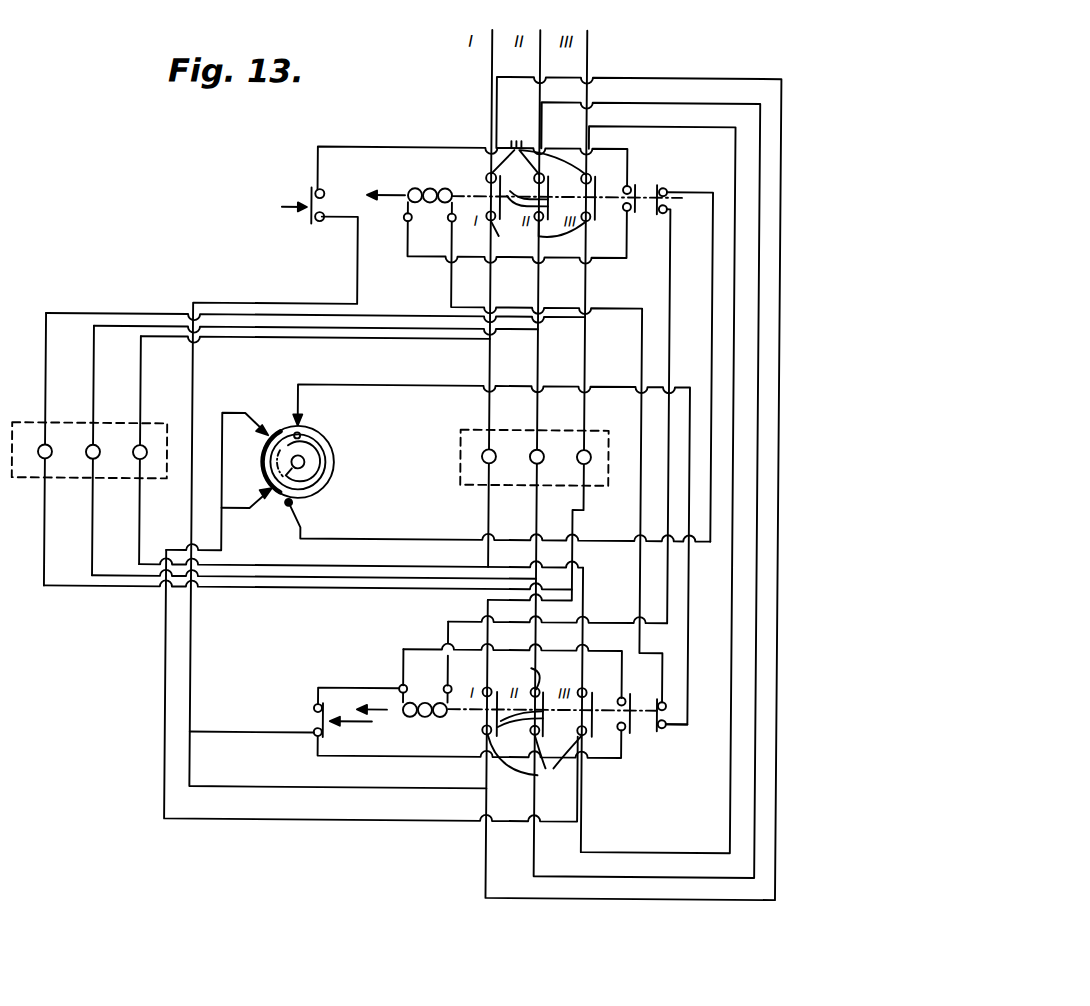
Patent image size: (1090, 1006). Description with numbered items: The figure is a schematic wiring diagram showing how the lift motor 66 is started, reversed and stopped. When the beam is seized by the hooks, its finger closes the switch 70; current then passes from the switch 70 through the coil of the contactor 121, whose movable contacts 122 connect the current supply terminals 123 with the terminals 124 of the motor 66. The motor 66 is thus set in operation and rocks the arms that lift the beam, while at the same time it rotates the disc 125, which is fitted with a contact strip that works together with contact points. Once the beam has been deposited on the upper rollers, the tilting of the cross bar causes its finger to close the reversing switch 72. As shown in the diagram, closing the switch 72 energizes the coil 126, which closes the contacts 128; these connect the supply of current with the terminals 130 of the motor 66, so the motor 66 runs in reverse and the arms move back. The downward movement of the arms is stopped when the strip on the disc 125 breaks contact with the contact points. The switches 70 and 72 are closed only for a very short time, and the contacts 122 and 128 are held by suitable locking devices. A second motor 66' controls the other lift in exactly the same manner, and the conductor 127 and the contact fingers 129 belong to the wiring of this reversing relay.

The reversing switch 72 is at (309, 186).
The coil 126 is at (411, 192).
The conductor 127 is at (428, 258).
The contacts 128 is at (527, 191).
The contact fingers 129 is at (538, 148).
The terminals of motor 130 is at (538, 238).
The motor 66' is at (90, 466).
The motor 66 is at (520, 472).
The disc 125 is at (314, 460).
The contactor 121 is at (407, 649).
The terminals of motor 124 is at (596, 677).
The movable contacts 122 is at (520, 727).
The current supply terminals 123 is at (534, 762).
The switch 70 is at (343, 726).